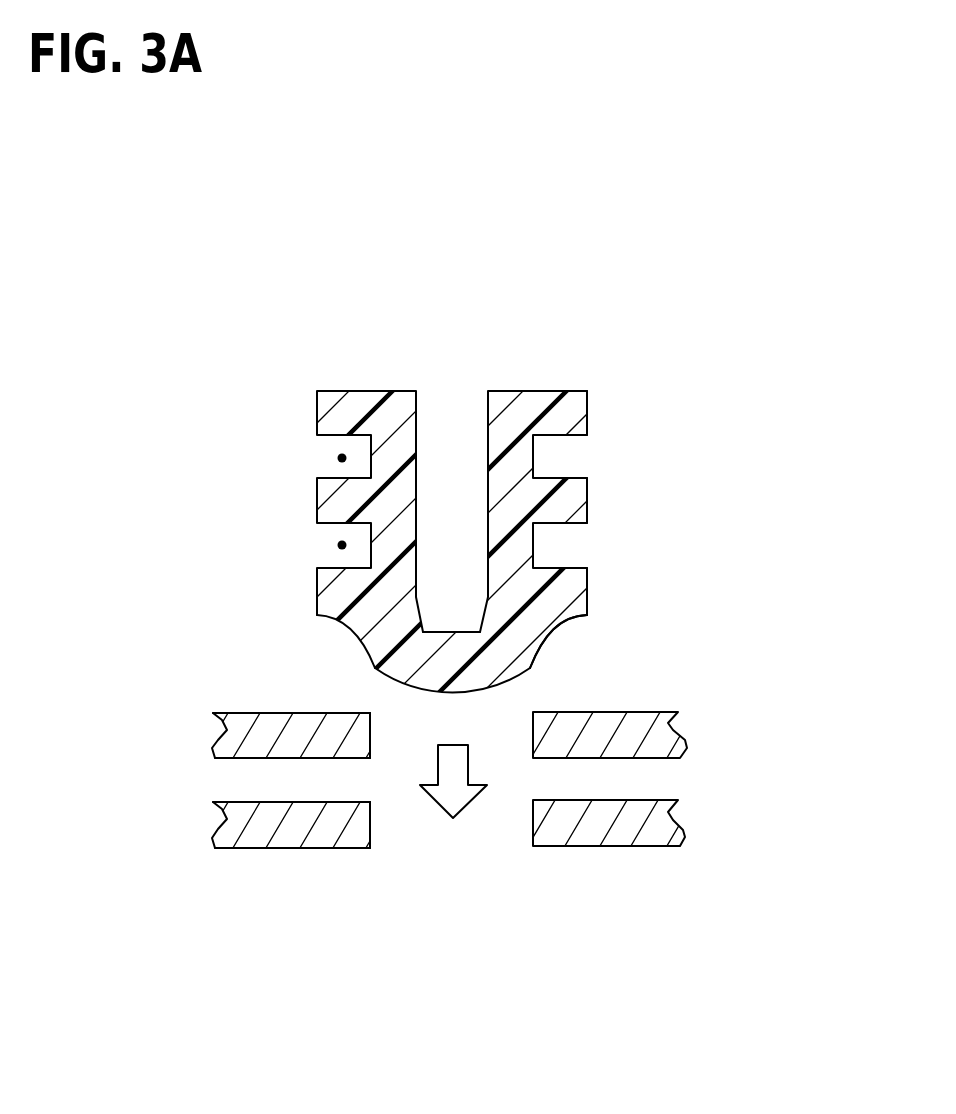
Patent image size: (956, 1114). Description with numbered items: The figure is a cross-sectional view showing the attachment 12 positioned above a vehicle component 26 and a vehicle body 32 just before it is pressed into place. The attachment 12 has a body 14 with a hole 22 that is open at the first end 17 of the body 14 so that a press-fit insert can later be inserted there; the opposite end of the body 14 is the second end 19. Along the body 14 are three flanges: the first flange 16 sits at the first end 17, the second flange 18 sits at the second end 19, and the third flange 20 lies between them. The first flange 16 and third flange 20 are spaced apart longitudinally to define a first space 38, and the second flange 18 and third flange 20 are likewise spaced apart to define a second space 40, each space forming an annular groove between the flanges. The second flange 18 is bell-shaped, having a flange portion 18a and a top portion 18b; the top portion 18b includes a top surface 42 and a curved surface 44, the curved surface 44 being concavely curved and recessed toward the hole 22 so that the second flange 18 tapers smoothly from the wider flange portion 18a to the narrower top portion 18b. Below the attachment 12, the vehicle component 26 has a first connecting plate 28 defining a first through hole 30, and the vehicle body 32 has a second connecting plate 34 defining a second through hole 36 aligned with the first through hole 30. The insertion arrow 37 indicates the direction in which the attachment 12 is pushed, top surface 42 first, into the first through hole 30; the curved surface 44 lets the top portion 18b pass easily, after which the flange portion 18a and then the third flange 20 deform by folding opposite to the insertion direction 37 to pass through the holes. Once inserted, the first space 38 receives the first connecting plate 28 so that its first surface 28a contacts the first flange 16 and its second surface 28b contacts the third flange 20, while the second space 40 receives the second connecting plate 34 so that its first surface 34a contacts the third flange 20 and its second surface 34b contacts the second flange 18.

The attachment 12 is at (626, 302).
The body 14 is at (512, 412).
The first flange 16 is at (572, 415).
The first end 17 is at (355, 391).
The second flange 18 is at (752, 553).
The flange portion 18a is at (573, 595).
The top portion 18b is at (498, 657).
The second end 19 is at (452, 692).
The third flange 20 is at (573, 503).
The hole 22 is at (417, 423).
The vehicle component 26 is at (740, 755).
The first connecting plate 28 is at (650, 733).
The first surface 28a is at (258, 713).
The second surface 28b is at (260, 758).
The first through hole 30 is at (371, 737).
The vehicle body 32 is at (742, 838).
The second connecting plate 34 is at (667, 833).
The first surface 34a is at (263, 802).
The second surface 34b is at (267, 848).
The second through hole 36 is at (370, 822).
The insertion arrow 37 is at (467, 799).
The first space 38 is at (338, 458).
The second space 40 is at (338, 545).
The top surface 42 is at (515, 682).
The curved surface 44 is at (340, 626).